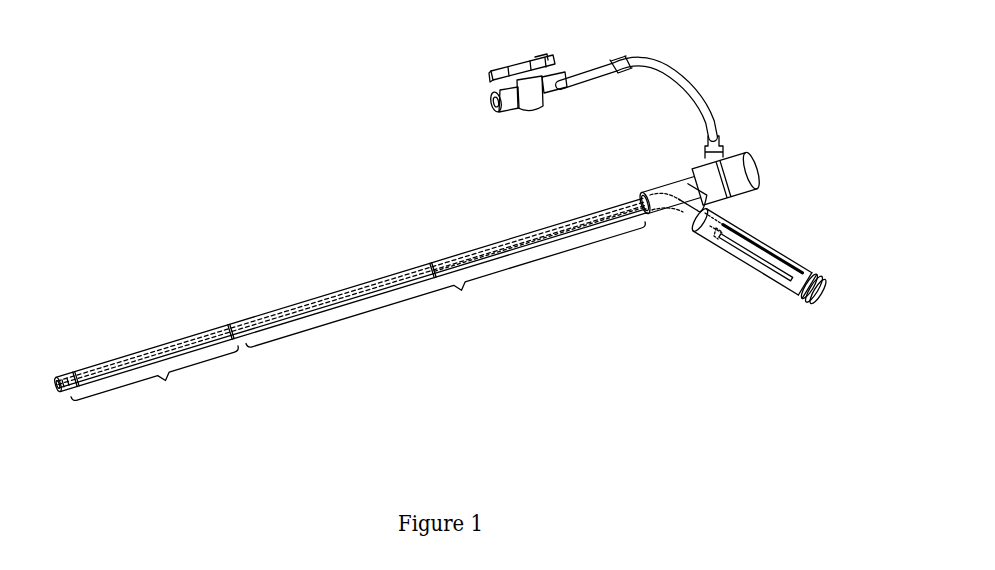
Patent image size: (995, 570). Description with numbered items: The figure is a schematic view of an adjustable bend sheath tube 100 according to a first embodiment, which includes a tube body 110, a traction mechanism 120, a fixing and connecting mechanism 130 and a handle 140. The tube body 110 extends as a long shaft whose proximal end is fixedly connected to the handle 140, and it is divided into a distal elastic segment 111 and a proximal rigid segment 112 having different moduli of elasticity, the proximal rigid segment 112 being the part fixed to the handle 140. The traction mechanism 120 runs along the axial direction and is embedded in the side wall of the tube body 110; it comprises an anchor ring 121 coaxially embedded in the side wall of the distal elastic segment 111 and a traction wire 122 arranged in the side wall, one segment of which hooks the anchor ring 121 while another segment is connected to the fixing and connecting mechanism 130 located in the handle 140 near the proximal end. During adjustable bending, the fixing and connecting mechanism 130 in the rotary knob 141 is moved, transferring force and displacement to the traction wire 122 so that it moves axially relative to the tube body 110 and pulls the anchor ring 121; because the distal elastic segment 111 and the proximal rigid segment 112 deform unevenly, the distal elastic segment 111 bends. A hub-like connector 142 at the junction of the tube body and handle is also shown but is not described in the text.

The adjustable bend sheath tube 100 is at (255, 78).
The tube body 110 is at (344, 279).
The distal elastic segment 111 is at (154, 379).
The proximal rigid segment 112 is at (445, 284).
The traction mechanism 120 is at (415, 262).
The anchor ring 121 is at (73, 373).
The traction wire 122 is at (510, 243).
The fixing and connecting mechanism 130 is at (728, 247).
The handle 140 is at (756, 220).
The rotary knob 141 is at (788, 291).
The hub 142 is at (687, 191).